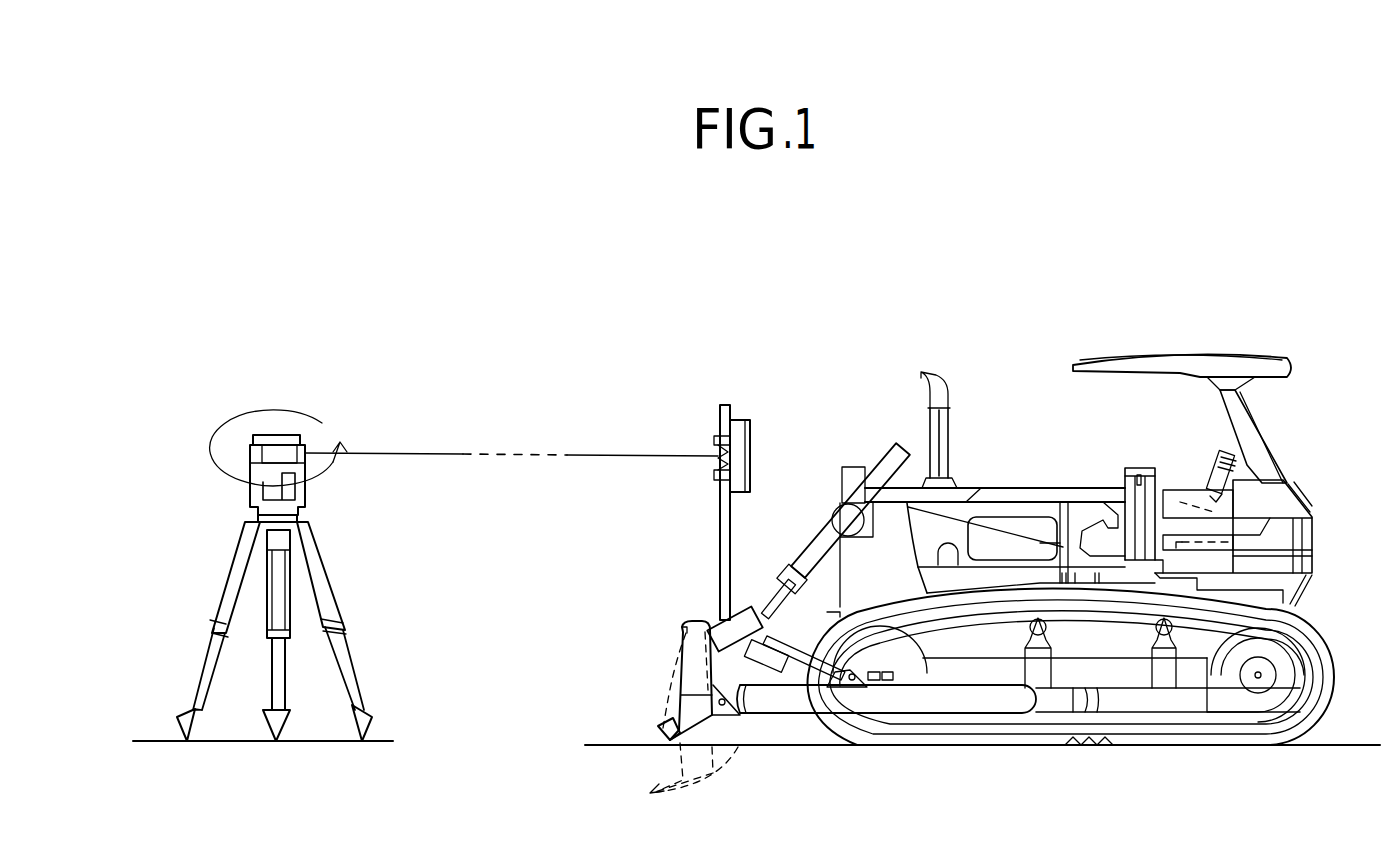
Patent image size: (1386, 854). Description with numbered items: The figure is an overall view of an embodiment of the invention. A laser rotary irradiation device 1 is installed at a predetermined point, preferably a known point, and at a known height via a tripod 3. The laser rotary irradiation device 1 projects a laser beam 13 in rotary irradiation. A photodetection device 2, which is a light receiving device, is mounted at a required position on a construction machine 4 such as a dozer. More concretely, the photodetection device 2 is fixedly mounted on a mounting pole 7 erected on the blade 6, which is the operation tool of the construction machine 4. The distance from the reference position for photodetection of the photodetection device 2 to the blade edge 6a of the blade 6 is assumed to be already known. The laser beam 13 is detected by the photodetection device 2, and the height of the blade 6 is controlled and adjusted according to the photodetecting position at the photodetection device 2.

The laser rotary irradiation device 1 is at (268, 435).
The photodetection device 2 is at (750, 432).
The tripod 3 is at (232, 553).
The construction machine 4 is at (1008, 362).
The blade 6 is at (682, 647).
The blade edge 6a is at (663, 737).
The mounting pole 7 is at (718, 520).
The laser beam 13 is at (420, 450).